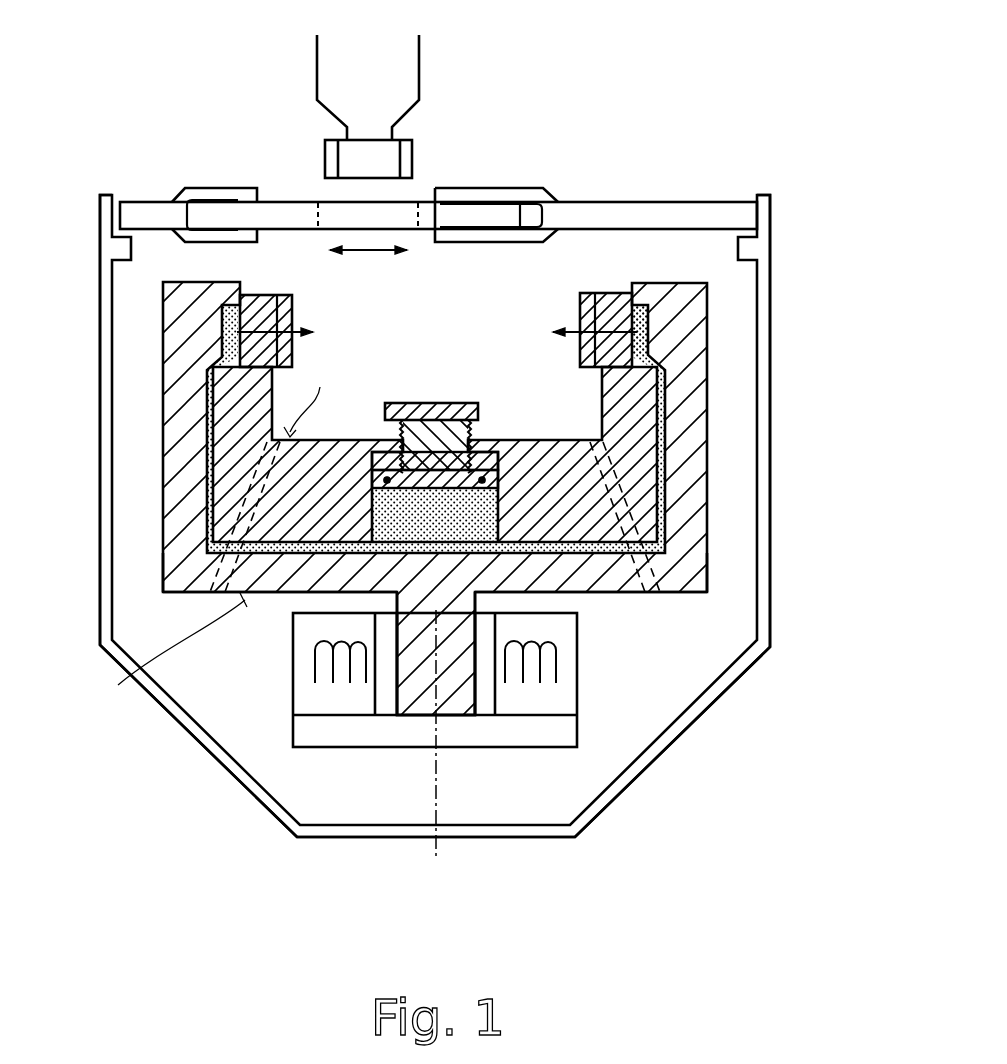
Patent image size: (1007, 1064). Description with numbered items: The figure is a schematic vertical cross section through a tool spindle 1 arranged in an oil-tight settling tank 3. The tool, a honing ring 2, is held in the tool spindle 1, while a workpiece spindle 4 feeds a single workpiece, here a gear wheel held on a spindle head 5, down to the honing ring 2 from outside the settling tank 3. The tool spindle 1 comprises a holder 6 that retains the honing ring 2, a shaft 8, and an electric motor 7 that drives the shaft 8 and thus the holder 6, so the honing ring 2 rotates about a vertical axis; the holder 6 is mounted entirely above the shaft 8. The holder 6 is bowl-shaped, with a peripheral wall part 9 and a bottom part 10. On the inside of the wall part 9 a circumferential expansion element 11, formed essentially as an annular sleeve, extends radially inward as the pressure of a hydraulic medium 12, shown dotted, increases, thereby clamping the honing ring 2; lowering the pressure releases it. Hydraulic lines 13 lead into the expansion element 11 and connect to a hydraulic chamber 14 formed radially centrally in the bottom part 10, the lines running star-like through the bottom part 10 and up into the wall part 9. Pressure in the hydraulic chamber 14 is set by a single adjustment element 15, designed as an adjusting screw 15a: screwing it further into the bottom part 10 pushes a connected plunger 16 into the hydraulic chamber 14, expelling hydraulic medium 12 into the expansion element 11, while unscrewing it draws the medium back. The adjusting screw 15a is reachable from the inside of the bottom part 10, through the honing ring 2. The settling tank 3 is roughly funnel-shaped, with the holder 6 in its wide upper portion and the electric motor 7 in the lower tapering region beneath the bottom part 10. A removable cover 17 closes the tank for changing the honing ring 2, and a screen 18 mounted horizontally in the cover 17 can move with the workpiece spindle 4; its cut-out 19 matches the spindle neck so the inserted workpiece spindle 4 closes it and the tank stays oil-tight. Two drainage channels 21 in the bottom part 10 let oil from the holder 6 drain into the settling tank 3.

The tool spindle 1 is at (275, 620).
The honing ring 2 is at (615, 305).
The settling tank 3 is at (763, 567).
The workpiece spindle 4 is at (402, 78).
The spindle head 5 is at (405, 162).
The holder 6 is at (183, 525).
The electric motor 7 is at (545, 660).
The shaft 8 is at (413, 670).
The peripheral wall part 9 is at (685, 372).
The bottom part 10 is at (623, 580).
The expansion element 11 is at (647, 320).
The hydraulic medium 12 is at (515, 480).
The hydraulic lines 13 is at (212, 413).
The hydraulic chamber 14 is at (383, 505).
The adjustment element 15 is at (444, 387).
The adjusting screw 15a is at (435, 437).
The plunger 16 is at (470, 468).
The cover 17 is at (652, 222).
The screen 18 is at (287, 213).
The cut-out 19 is at (337, 213).
The drainage channels 21 is at (677, 500).